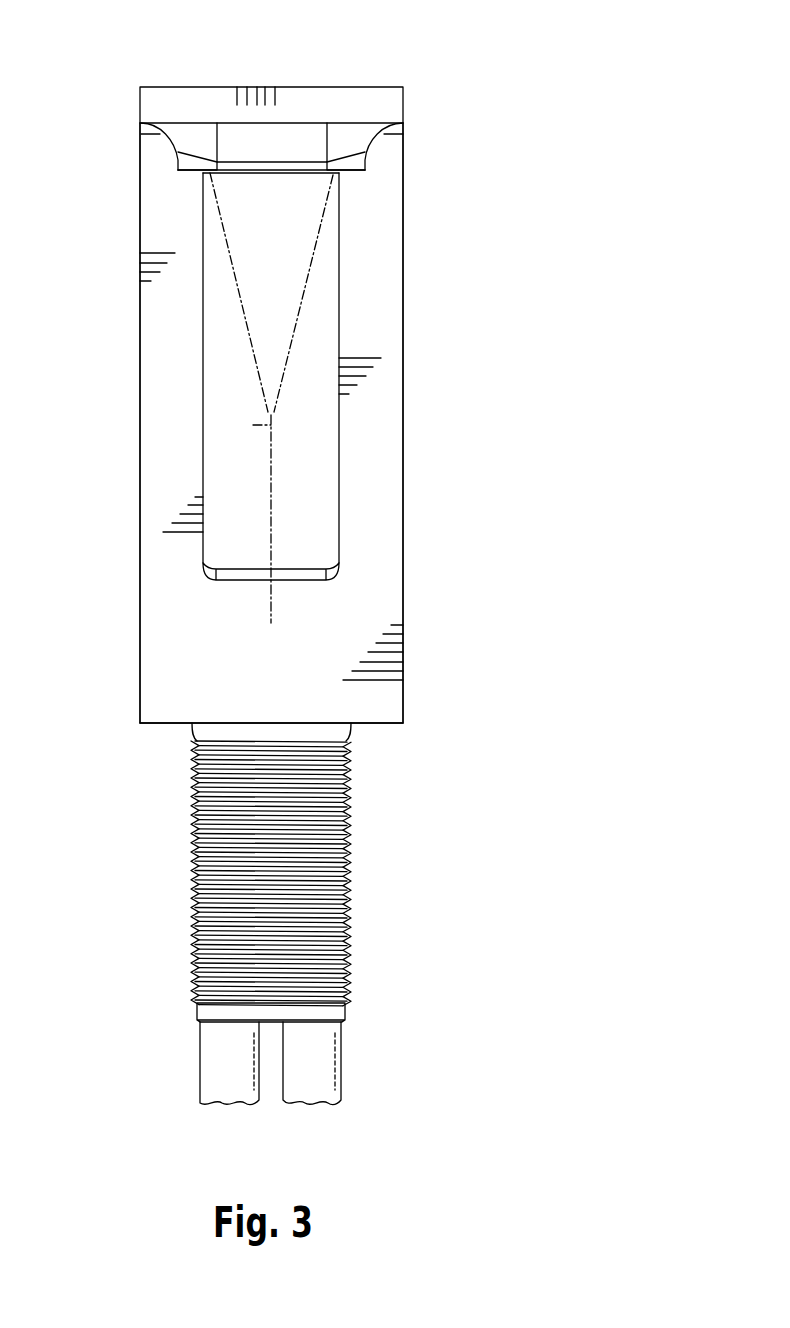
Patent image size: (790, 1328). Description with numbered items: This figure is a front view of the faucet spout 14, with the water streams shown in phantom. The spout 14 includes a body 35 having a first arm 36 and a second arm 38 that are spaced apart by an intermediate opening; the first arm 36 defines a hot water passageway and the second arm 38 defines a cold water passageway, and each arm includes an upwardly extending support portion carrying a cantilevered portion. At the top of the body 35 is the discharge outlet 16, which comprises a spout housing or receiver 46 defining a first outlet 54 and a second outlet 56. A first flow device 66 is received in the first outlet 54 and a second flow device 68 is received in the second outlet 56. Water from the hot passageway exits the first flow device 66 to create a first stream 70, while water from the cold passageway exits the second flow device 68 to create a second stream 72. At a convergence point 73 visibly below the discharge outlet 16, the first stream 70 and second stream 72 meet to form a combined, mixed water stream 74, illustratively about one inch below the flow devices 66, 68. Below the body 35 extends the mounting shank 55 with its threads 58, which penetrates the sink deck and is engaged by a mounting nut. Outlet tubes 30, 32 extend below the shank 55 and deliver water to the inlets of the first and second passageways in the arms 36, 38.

The faucet spout 14 is at (613, 108).
The discharge outlet 16 is at (382, 147).
The spout housing or receiver 46 is at (182, 146).
The first outlet 54 is at (200, 172).
The second outlet 56 is at (342, 175).
The first flow device 66 is at (205, 178).
The second flow device 68 is at (337, 178).
The first stream 70 is at (247, 310).
The second stream 72 is at (295, 310).
The first arm 36 is at (158, 375).
The second arm 38 is at (400, 401).
The convergence point 73 is at (253, 425).
The combined stream 74 is at (271, 484).
The body 35 is at (403, 612).
The mounting shank 55 is at (190, 889).
The threads 58 is at (360, 874).
The outlet tube 30 is at (215, 1067).
The outlet tube 32 is at (342, 1062).